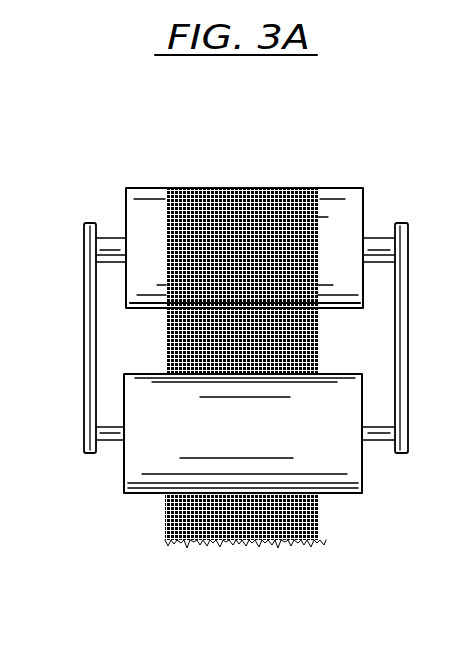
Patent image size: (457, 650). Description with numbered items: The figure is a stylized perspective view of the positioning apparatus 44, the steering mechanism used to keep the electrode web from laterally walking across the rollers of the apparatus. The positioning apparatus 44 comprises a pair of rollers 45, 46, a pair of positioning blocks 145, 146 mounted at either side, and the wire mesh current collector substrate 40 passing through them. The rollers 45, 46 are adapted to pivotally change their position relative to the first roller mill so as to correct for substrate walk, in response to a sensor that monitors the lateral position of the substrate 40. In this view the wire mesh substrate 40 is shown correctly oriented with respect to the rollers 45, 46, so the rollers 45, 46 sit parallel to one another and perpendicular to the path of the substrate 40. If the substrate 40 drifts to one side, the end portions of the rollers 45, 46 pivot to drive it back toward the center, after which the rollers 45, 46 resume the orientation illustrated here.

The positioning apparatus 44 is at (383, 183).
The roller 45 is at (145, 208).
The roller 46 is at (335, 465).
The wire mesh current collector substrate 40 is at (222, 525).
The positioning block 145 is at (90, 337).
The positioning block 146 is at (407, 325).